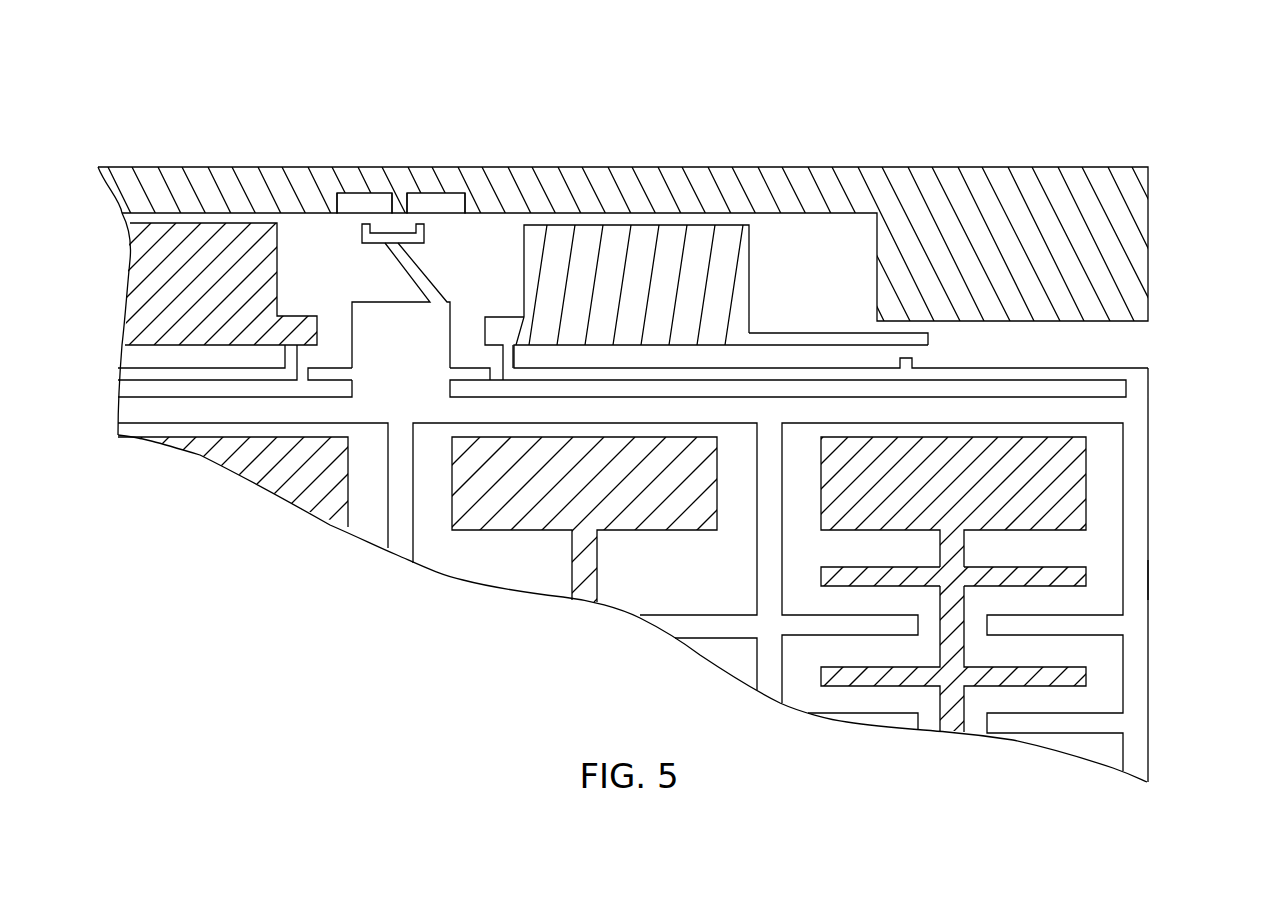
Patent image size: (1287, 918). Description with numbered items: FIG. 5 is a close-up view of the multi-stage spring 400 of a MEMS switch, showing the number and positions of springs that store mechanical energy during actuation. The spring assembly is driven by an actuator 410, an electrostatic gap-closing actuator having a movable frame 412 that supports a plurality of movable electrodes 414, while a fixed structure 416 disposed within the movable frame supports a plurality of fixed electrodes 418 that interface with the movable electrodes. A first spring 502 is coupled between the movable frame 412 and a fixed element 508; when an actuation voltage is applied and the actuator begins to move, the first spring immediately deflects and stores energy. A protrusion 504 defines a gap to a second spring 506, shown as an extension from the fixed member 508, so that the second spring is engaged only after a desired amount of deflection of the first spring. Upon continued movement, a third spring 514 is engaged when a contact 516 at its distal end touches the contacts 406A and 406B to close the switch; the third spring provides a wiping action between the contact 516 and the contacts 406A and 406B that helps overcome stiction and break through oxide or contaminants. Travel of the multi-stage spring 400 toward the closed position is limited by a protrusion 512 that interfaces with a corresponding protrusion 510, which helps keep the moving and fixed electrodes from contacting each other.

The multi-stage spring 400 is at (396, 122).
The contact 406A is at (356, 192).
The contact 406B is at (437, 192).
The first spring 502 is at (1107, 368).
The protrusion 504 is at (913, 362).
The second spring 506 is at (833, 333).
The fixed element 508 is at (749, 247).
The protrusion 510 is at (487, 320).
The protrusion 512 is at (469, 366).
The third spring 514 is at (407, 274).
The contact 516 is at (358, 240).
The actuator 410 is at (1195, 497).
The movable frame 412 is at (1150, 571).
The movable electrodes 414 is at (1088, 615).
The fixed structure 416 is at (935, 493).
The fixed electrodes 418 is at (1000, 567).